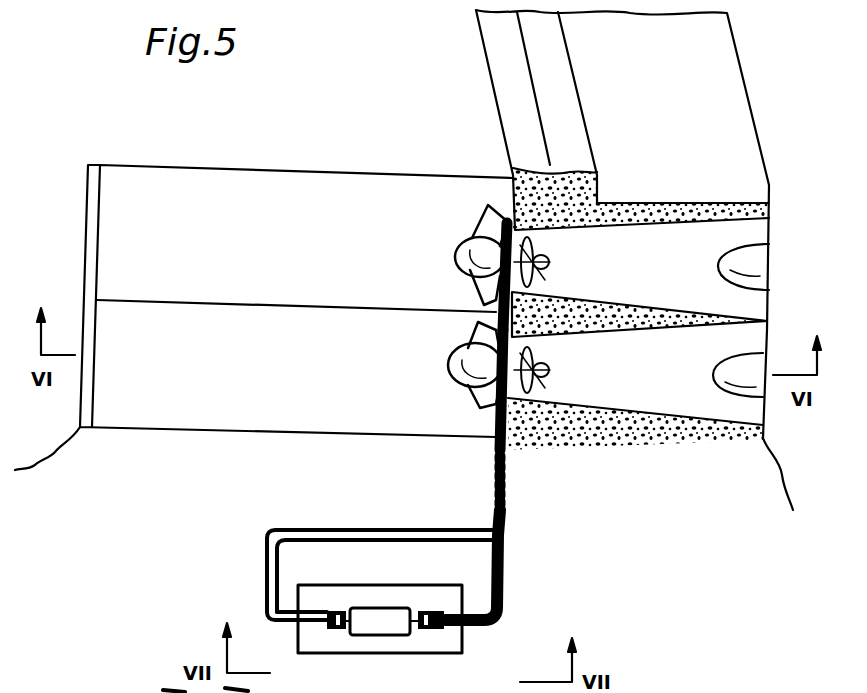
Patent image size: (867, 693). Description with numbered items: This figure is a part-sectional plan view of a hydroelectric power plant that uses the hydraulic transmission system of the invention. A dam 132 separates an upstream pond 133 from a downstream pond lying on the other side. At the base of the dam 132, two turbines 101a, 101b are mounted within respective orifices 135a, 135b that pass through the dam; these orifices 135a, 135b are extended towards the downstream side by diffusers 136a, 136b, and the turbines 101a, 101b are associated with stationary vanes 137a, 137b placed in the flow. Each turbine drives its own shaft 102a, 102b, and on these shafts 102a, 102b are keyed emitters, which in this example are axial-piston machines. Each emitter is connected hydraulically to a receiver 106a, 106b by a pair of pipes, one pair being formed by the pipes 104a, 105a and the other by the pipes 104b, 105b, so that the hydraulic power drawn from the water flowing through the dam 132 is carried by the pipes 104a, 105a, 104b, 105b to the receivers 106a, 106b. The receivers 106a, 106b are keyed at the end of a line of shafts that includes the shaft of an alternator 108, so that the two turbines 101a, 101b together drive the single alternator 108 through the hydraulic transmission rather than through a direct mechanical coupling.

The dam 132 is at (575, 118).
The upstream pond 133 is at (265, 178).
The turbine 101a is at (540, 384).
The turbine 101b is at (545, 250).
The shaft 102a is at (522, 403).
The shaft 102b is at (482, 214).
The orifice 135a is at (530, 352).
The orifice 135b is at (538, 284).
The diffuser 136a is at (699, 398).
The diffuser 136b is at (680, 227).
The stationary vanes 137a is at (470, 399).
The stationary vanes 137b is at (470, 230).
The pipe 104a is at (266, 578).
The pipe 104b is at (503, 576).
The pipe 105a is at (281, 562).
The pipe 105b is at (491, 569).
The receiver 106a is at (421, 630).
The receiver 106b is at (336, 630).
The alternator 108 is at (387, 615).